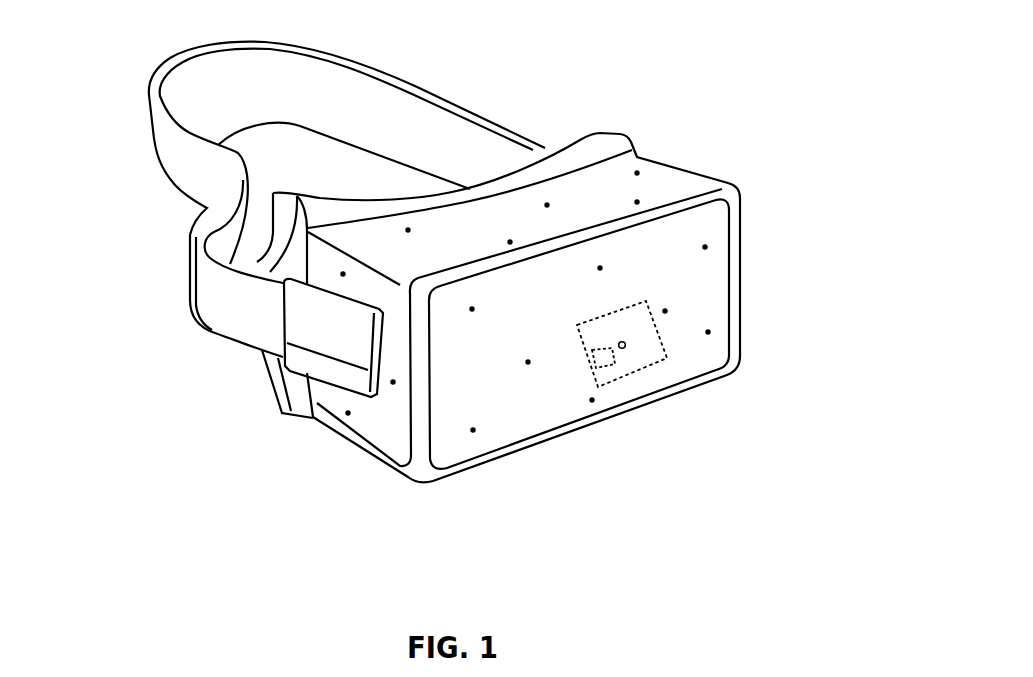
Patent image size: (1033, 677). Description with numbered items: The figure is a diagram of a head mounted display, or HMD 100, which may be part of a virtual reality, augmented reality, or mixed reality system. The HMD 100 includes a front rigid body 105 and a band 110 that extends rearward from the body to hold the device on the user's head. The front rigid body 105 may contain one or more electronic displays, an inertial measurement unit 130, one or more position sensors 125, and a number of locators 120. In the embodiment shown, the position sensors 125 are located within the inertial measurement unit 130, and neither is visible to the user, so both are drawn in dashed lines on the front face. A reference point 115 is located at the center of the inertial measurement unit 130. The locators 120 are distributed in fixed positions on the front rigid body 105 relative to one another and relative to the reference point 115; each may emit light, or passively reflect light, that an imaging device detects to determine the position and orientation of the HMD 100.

The head mounted display (HMD) 100 is at (68, 40).
The front rigid body 105 is at (866, 136).
The band 110 is at (452, 104).
The reference point 115 is at (627, 363).
The locators 120 is at (728, 322).
The position sensors 125 is at (597, 370).
The inertial measurement unit (IMU) 130 is at (680, 364).